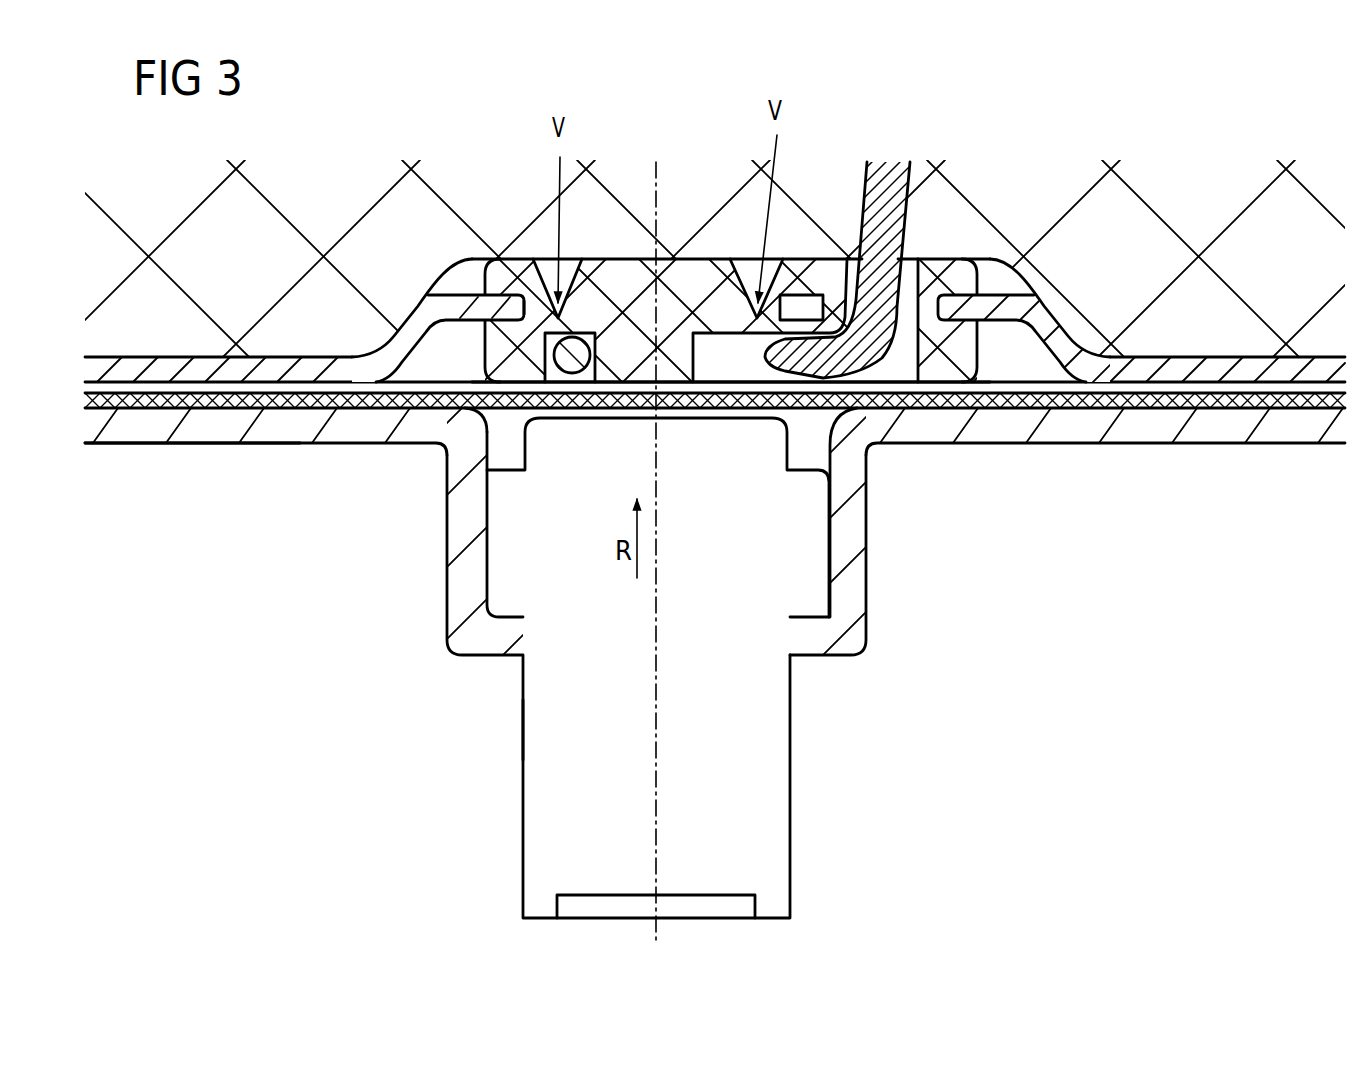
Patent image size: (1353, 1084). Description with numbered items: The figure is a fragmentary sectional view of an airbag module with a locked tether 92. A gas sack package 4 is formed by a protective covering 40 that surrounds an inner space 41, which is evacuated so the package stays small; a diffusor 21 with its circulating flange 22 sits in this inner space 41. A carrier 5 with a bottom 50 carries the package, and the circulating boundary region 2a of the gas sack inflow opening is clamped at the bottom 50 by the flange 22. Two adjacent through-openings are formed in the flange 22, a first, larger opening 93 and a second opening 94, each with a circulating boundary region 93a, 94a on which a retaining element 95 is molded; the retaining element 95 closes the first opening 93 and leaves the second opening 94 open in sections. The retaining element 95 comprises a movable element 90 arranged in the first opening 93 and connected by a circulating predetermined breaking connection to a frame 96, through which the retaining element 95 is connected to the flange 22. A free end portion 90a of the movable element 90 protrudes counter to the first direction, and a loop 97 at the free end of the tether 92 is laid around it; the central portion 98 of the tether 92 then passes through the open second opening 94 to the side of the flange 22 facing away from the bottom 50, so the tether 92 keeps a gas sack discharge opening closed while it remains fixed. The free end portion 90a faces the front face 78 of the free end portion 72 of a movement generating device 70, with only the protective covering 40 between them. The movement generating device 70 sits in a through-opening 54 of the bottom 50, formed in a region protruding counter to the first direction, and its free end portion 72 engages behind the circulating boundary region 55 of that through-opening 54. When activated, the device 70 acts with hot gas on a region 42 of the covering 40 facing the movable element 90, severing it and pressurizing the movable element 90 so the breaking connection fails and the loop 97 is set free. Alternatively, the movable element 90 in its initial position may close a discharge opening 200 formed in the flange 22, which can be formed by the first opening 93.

The boundary region of inflow opening 2a is at (172, 395).
The gas sack package 4 is at (1110, 403).
The carrier 5 is at (348, 432).
The diffusor 21 is at (303, 385).
The flange 22 is at (265, 372).
The protective covering 40 is at (1043, 428).
The inner space 41 is at (492, 205).
The region of protective covering 42 is at (711, 392).
The bottom 50 is at (202, 433).
The through-opening 54 is at (551, 696).
The boundary region of through-opening 55 is at (805, 640).
The movement generating device 70 is at (767, 742).
The free end portion of movement generating device 72 is at (788, 550).
The front face 78 is at (753, 425).
The movable element 90 is at (693, 273).
The free end portion of movable element 90a is at (650, 370).
The tether 92 is at (892, 187).
The first opening 93 is at (622, 303).
The boundary region of first opening 93a is at (785, 305).
The second opening 94 is at (907, 315).
The boundary region of second opening 94a is at (834, 300).
The retaining element 95 is at (466, 259).
The frame 96 is at (503, 310).
The loop 97 is at (570, 356).
The central portion of tether 98 is at (953, 302).
The discharge opening 200 is at (648, 305).